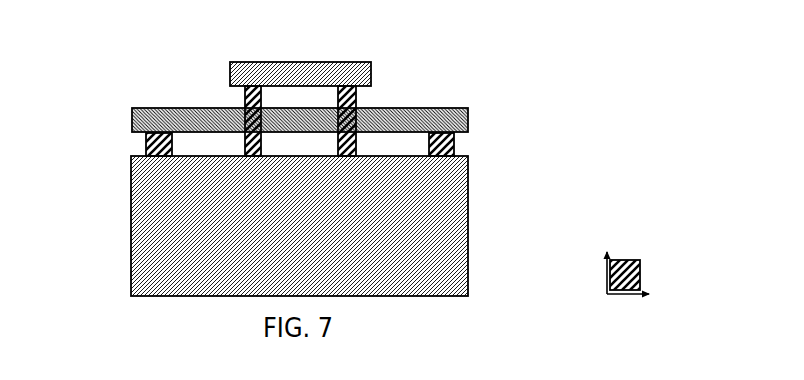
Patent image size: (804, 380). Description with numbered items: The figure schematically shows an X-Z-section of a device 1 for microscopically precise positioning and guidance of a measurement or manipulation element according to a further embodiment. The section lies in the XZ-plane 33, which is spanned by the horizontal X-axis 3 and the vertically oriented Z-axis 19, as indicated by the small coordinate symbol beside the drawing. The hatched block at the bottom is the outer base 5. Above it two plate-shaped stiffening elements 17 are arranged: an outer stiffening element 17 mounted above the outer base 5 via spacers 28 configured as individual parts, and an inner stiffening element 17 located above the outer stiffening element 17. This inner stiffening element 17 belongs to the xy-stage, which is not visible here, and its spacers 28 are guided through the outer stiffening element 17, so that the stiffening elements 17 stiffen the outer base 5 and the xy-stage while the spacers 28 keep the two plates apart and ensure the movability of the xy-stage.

The device 1 is at (86, 41).
The outer base 5 is at (428, 240).
The stiffening element 17 is at (250, 70).
The spacer 28 is at (246, 93).
The Z-axis 19 is at (608, 262).
The X-axis 3 is at (630, 295).
The XZ-plane 33 is at (628, 260).